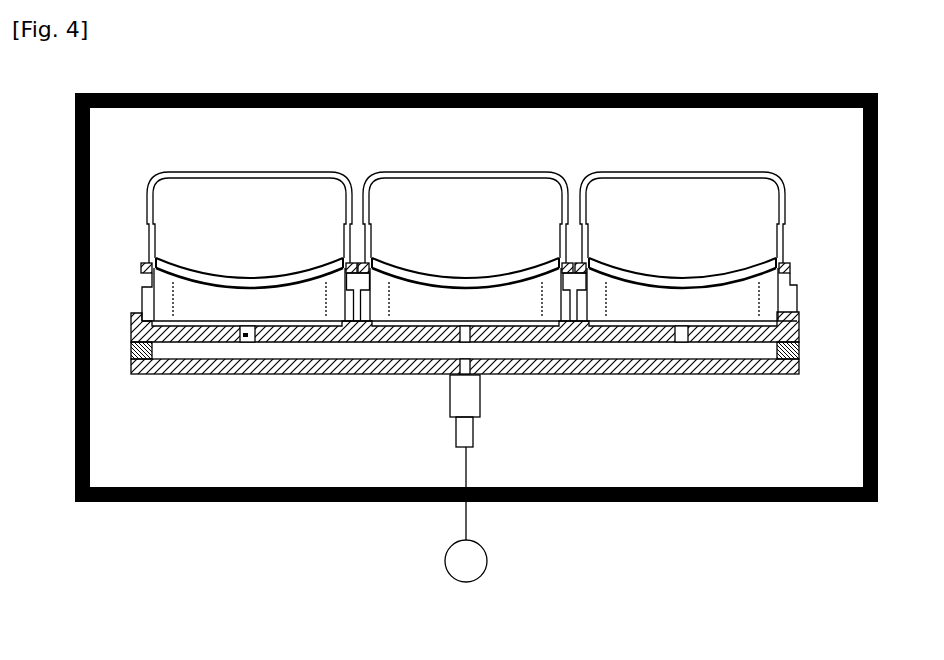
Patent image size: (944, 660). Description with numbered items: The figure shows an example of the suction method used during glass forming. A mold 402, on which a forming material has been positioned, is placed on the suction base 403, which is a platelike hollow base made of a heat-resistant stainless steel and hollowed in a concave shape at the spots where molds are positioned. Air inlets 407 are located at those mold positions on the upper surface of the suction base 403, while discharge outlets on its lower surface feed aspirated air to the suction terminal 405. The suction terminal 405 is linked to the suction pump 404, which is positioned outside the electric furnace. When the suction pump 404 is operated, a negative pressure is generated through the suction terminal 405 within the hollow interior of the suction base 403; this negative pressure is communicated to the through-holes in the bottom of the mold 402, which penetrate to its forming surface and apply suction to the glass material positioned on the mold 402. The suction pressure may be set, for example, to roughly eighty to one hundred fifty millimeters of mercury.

The mold 402 is at (237, 172).
The suction base 403 is at (587, 373).
The suction pump 404 is at (487, 557).
The suction terminal 405 is at (468, 395).
The air inlet 407 is at (246, 338).